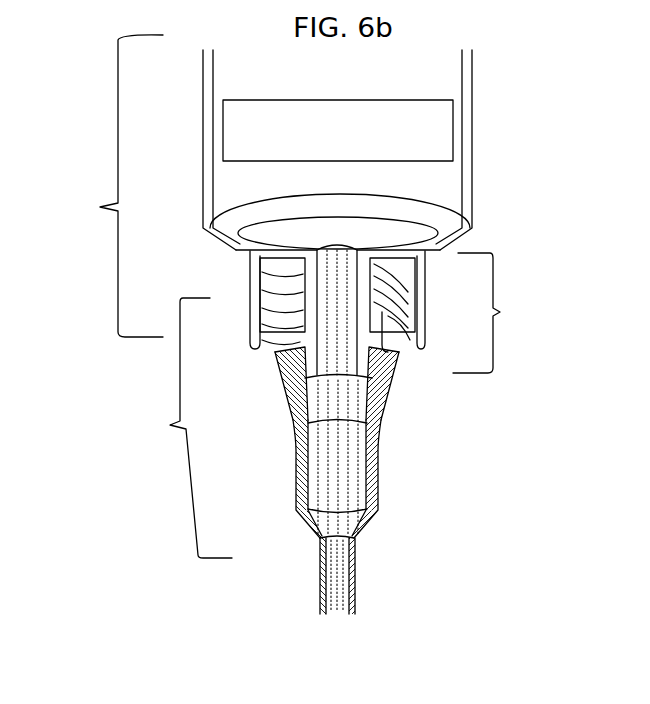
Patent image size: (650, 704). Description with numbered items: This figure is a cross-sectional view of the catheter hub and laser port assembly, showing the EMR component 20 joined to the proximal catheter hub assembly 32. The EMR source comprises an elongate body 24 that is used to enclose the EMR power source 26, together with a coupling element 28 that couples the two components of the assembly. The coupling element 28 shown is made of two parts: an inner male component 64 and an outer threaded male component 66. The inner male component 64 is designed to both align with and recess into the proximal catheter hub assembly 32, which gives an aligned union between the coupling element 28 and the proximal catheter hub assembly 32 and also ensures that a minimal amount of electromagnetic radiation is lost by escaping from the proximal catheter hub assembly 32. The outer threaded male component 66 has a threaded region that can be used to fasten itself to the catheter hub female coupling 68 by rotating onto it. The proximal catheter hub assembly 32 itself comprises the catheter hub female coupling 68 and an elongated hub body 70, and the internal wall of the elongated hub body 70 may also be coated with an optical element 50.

The EMR component 20 is at (100, 206).
The elongate body 24 is at (472, 80).
The EMR power source 26 is at (453, 140).
The coupling element 28 is at (500, 312).
The proximal catheter hub assembly 32 is at (172, 425).
The optical element 50 is at (298, 450).
The inner male component 64 is at (400, 340).
The outer threaded male component 66 is at (250, 273).
The catheter hub female coupling 68 is at (252, 332).
The elongated hub body 70 is at (380, 462).